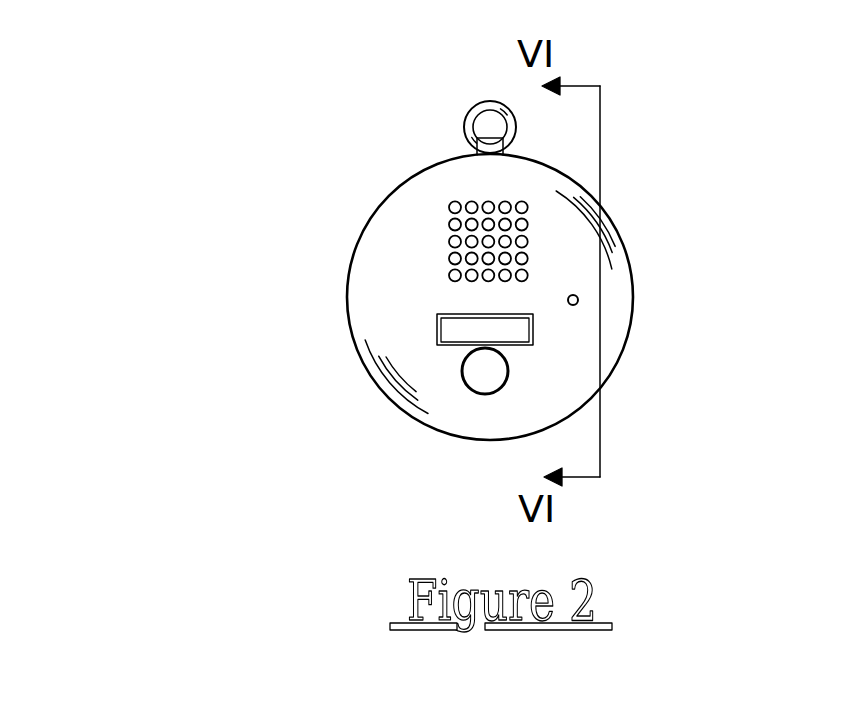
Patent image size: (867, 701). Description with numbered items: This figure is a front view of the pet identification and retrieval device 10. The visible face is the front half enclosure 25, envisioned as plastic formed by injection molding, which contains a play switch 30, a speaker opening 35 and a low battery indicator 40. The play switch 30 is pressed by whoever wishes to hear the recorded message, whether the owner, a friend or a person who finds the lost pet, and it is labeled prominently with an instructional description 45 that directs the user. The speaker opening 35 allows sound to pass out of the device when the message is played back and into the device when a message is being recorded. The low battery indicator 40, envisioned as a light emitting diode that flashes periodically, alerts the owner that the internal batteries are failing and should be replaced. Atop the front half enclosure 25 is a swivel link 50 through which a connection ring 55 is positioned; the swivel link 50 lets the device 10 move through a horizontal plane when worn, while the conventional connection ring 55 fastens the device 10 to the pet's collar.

The pet identification and retrieval device 10 is at (393, 248).
The front half enclosure 25 is at (398, 305).
The play switch 30 is at (479, 375).
The speaker opening 35 is at (460, 235).
The low battery indicator 40 is at (579, 297).
The instructional description 45 is at (532, 332).
The swivel link 50 is at (495, 147).
The connection ring 55 is at (468, 110).